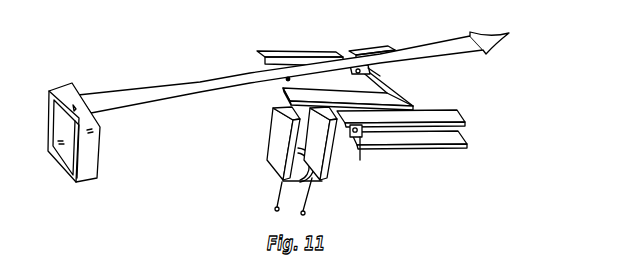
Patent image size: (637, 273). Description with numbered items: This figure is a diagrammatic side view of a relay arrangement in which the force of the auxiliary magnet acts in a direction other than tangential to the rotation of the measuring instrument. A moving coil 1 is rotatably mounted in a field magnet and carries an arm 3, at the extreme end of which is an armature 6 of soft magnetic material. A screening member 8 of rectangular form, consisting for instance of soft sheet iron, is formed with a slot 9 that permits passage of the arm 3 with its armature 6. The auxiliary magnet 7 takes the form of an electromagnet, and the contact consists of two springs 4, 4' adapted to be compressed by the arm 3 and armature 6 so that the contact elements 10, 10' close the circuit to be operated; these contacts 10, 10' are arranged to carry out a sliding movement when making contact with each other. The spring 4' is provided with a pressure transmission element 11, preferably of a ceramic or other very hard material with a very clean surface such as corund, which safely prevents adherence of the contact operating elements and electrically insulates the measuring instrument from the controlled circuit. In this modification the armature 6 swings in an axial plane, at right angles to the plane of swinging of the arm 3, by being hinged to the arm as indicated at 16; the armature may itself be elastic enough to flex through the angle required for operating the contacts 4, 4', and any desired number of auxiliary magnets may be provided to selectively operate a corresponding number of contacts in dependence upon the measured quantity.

The moving coil 1 is at (93, 166).
The arm 3 is at (168, 94).
The contact spring 4 is at (409, 149).
The contact spring 4' is at (401, 108).
The armature 6 is at (349, 52).
The auxiliary magnet 7 is at (287, 168).
The screening member 8 is at (282, 57).
The slot 9 is at (378, 61).
The contact element 10 is at (351, 144).
The contact element 10' is at (371, 169).
The pressure transmission element 11 is at (380, 68).
The hinge 16 is at (286, 81).